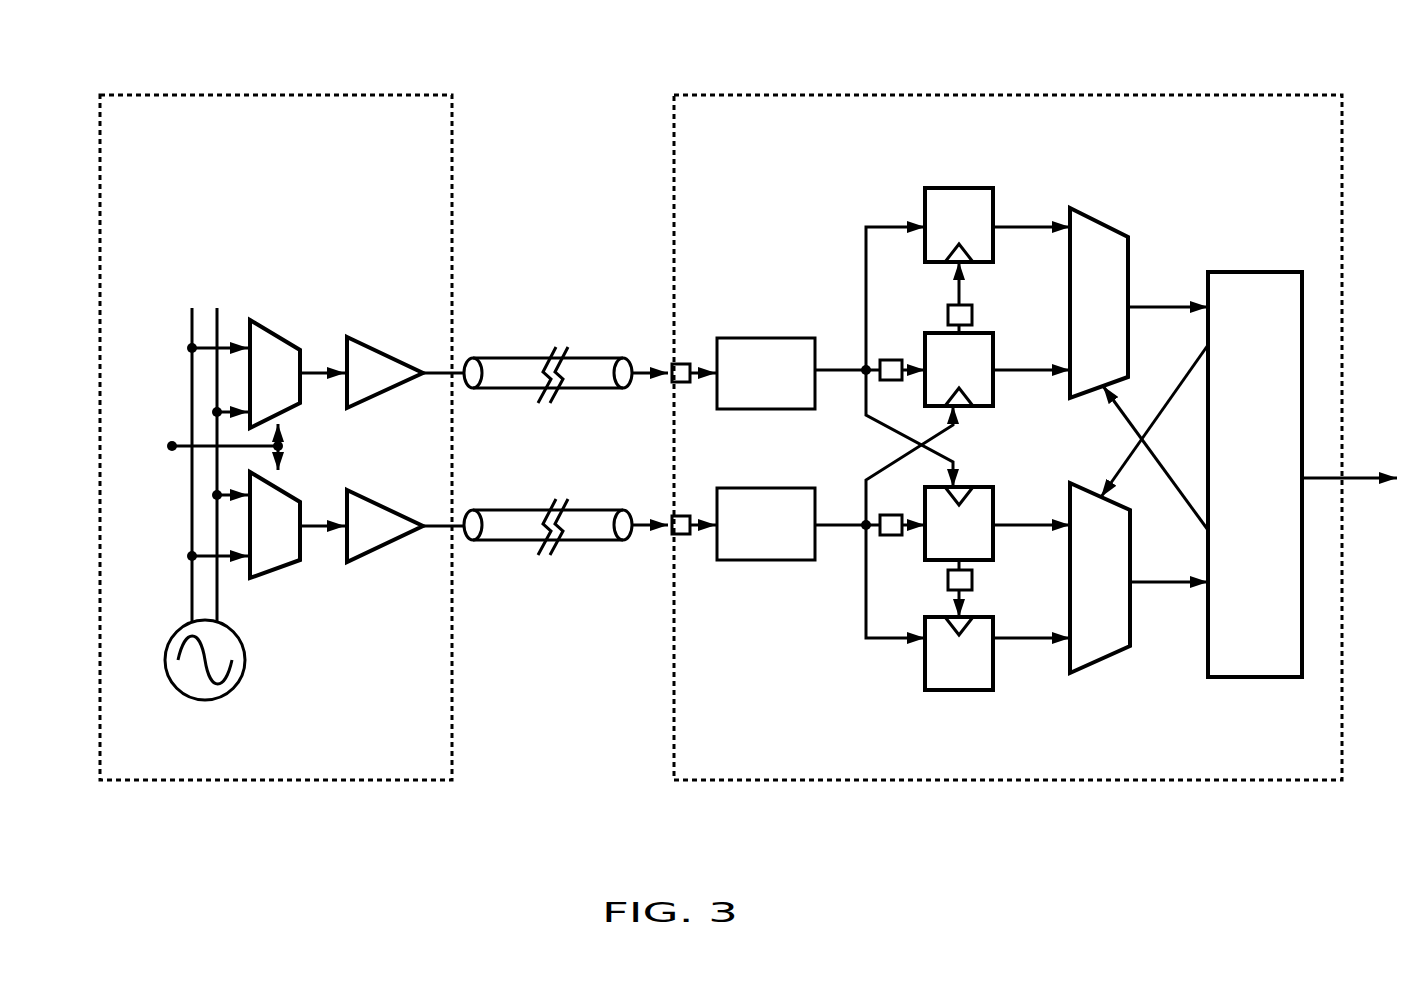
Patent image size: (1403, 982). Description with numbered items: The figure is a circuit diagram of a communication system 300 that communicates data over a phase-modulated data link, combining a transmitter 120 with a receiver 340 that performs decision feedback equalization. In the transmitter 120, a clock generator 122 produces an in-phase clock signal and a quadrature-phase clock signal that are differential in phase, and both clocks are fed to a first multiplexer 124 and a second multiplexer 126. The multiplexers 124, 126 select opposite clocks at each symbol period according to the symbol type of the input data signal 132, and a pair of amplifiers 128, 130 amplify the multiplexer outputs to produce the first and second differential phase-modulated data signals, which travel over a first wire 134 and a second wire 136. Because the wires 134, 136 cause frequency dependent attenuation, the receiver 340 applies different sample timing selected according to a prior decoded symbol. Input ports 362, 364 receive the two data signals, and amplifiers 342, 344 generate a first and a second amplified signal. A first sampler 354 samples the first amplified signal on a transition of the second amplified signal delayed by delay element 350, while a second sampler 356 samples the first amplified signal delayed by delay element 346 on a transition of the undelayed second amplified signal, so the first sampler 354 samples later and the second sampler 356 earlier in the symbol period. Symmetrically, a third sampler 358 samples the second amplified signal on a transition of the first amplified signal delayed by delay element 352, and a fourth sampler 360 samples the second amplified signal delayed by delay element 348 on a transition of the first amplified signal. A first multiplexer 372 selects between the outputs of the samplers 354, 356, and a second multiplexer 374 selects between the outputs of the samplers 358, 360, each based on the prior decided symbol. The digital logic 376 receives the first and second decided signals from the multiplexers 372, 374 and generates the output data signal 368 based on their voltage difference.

The communication system 300 is at (568, 152).
The transmitter 120 is at (282, 177).
The clock generator 122 is at (243, 682).
The first multiplexer 124 is at (282, 333).
The second multiplexer 126 is at (283, 566).
The amplifier 128 is at (368, 338).
The amplifier 130 is at (383, 547).
The input data signal 132 is at (147, 475).
The first wire 134 is at (583, 356).
The second wire 136 is at (575, 542).
The receiver 340 is at (842, 172).
The first amplifier 342 is at (778, 338).
The second amplifier 344 is at (771, 560).
The delay element 346 is at (889, 358).
The delay element 348 is at (890, 537).
The delay element 350 is at (972, 313).
The delay element 352 is at (972, 580).
The first sampler 354 is at (957, 188).
The second sampler 356 is at (993, 395).
The third sampler 358 is at (993, 495).
The fourth sampler 360 is at (975, 690).
The input port 362 is at (683, 363).
The input port 364 is at (683, 515).
The output data signal 368 is at (1399, 553).
The first multiplexer 372 is at (1110, 228).
The second multiplexer 374 is at (1110, 660).
The digital logic 376 is at (1265, 272).